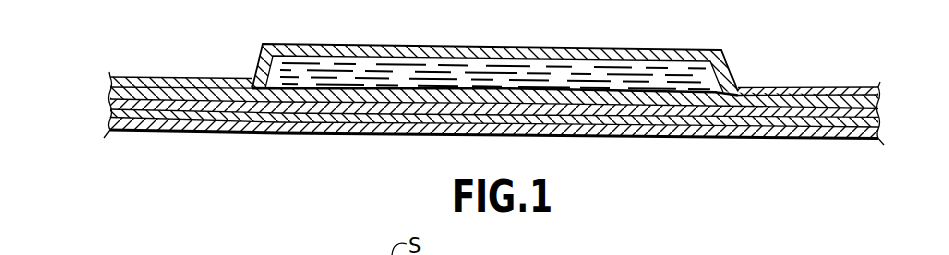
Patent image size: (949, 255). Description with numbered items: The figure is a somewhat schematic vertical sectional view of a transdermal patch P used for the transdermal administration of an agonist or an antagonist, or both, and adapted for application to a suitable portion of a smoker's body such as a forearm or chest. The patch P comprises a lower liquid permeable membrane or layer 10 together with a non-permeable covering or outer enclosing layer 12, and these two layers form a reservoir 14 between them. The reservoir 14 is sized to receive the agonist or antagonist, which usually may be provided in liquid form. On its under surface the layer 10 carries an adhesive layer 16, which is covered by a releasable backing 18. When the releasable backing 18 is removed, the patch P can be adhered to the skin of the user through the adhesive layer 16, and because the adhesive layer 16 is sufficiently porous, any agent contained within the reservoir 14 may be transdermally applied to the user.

The liquid permeable membrane 10 is at (876, 101).
The outer enclosing layer 12 is at (410, 47).
The reservoir 14 is at (318, 68).
The adhesive layer 16 is at (865, 116).
The releasable backing 18 is at (882, 139).
The transdermal patch P is at (749, 38).